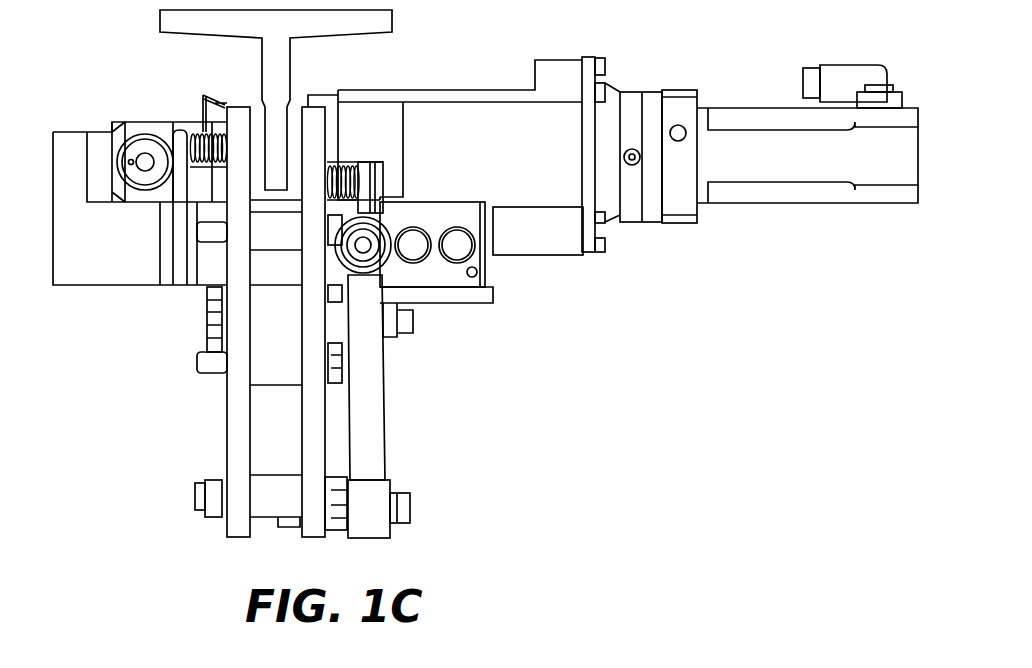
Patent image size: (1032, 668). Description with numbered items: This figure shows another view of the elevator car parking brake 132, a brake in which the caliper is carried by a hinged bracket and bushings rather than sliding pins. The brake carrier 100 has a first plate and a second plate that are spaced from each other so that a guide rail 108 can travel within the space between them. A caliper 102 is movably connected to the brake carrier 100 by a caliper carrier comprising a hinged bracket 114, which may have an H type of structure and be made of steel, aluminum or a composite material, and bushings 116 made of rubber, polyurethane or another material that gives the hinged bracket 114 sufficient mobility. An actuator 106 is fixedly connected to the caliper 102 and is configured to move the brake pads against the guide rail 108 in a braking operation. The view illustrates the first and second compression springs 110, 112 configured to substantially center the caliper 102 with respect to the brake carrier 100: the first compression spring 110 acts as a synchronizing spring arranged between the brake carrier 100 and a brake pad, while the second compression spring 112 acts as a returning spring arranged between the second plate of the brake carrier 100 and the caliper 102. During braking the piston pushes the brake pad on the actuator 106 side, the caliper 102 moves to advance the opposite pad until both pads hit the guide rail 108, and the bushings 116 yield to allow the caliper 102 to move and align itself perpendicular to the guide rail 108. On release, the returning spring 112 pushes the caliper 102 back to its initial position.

The elevator car parking brake 132 is at (120, 62).
The guide rail 108 is at (290, 72).
The brake carrier 100 is at (226, 420).
The second compression spring 112 is at (210, 150).
The actuator 106 is at (628, 100).
The first compression spring 110 is at (353, 193).
The bushings 116 is at (385, 243).
The caliper 102 is at (478, 262).
The hinged bracket 114 is at (387, 420).